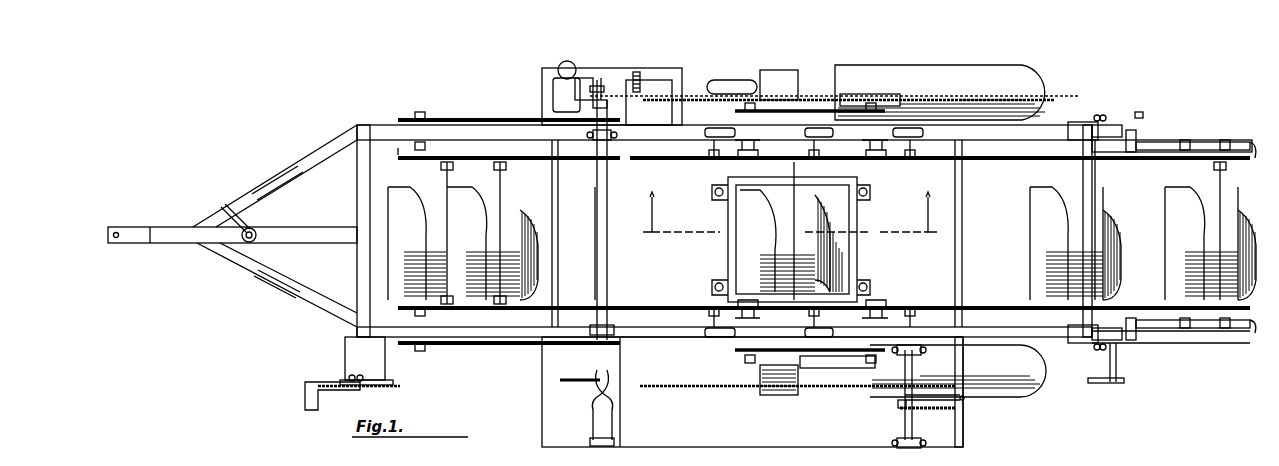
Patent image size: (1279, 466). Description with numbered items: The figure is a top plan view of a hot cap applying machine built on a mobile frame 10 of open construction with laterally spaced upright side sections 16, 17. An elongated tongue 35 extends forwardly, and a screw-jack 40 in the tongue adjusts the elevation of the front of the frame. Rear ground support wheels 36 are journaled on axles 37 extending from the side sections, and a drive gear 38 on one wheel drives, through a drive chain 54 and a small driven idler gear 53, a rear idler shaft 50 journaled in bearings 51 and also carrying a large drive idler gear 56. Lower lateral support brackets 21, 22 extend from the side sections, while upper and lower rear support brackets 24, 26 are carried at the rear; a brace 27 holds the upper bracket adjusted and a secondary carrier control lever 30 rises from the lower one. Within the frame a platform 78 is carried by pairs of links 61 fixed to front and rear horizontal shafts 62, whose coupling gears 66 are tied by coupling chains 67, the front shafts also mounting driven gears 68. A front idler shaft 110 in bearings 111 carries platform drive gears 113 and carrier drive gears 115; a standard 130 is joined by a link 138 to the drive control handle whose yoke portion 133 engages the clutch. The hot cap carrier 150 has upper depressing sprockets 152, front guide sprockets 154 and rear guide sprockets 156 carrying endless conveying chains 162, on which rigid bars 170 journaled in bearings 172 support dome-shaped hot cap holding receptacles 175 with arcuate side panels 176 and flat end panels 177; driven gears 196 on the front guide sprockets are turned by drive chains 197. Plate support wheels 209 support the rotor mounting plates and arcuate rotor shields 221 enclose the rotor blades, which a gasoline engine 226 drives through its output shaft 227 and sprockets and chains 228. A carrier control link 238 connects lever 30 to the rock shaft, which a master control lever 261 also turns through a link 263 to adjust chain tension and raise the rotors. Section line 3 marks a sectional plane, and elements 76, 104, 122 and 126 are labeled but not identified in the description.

The mobile frame 10 is at (352, 120).
The side section 16 is at (1060, 125).
The side section 17 is at (1050, 335).
The lower lateral support bracket 21 is at (675, 447).
The lower lateral support bracket 22 is at (672, 68).
The upper rear support bracket 24 is at (1160, 140).
The lower rear support bracket 26 is at (1210, 140).
The brace 27 is at (1128, 120).
The secondary carrier control lever 30 is at (1115, 384).
The tongue 35 is at (170, 228).
The rear ground support wheel 36 is at (965, 75).
The axle 37 is at (950, 165).
The drive gear 38 is at (965, 402).
The screw-jack 40 is at (247, 245).
The rear idler shaft 50 is at (915, 362).
The bearing 51 is at (935, 330).
The small driven idler gear 53 is at (895, 404).
The drive chain 54 is at (940, 415).
The large drive idler gear 56 is at (912, 380).
The link 61 is at (745, 152).
The horizontal shaft 62 is at (740, 148).
The coupling gear 66 is at (748, 103).
The coupling chain 67 is at (828, 100).
The driven gear 68 is at (775, 68).
The shaft 76 is at (866, 192).
The platform 78 is at (728, 207).
The belt 104 is at (1039, 458).
The front idler shaft 110 is at (605, 222).
The bearing 111 is at (615, 137).
The platform drive gear 113 is at (600, 78).
The carrier drive gear 115 is at (705, 308).
The lower drive chain 122 is at (815, 390).
The control lever 126 is at (655, 95).
The standard 130 is at (600, 440).
The yoke portion 133 is at (612, 398).
The link 138 is at (595, 418).
The hot cap carrier 150 is at (455, 155).
The upper depressing sprocket 152 is at (705, 162).
The front guide sprocket 154 is at (400, 162).
The rear guide sprocket 156 is at (1258, 152).
The conveying chain 162 is at (1003, 170).
The rigid bar 170 is at (460, 210).
The bearing 172 is at (487, 165).
The hot cap holding receptacle 175 is at (440, 240).
The arcuate side panel 176 is at (1234, 265).
The flat end panel 177 is at (1040, 246).
The driven gear 196 is at (408, 118).
The drive chain 197 is at (468, 120).
The plate support wheel 209 is at (735, 80).
The rotor shield 221 is at (795, 110).
The gasoline engine 226 is at (563, 62).
The output shaft 227 is at (580, 78).
The sprockets and chains 228 is at (525, 200).
The carrier control link 238 is at (1108, 380).
The master control lever 261 is at (330, 380).
The link 263 is at (415, 382).
The section line 3 is at (788, 216).